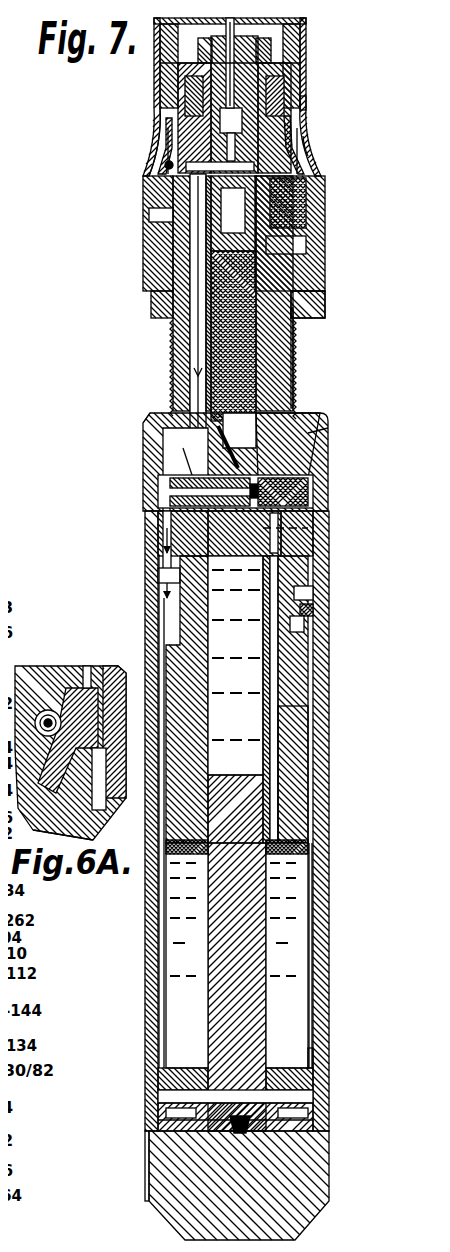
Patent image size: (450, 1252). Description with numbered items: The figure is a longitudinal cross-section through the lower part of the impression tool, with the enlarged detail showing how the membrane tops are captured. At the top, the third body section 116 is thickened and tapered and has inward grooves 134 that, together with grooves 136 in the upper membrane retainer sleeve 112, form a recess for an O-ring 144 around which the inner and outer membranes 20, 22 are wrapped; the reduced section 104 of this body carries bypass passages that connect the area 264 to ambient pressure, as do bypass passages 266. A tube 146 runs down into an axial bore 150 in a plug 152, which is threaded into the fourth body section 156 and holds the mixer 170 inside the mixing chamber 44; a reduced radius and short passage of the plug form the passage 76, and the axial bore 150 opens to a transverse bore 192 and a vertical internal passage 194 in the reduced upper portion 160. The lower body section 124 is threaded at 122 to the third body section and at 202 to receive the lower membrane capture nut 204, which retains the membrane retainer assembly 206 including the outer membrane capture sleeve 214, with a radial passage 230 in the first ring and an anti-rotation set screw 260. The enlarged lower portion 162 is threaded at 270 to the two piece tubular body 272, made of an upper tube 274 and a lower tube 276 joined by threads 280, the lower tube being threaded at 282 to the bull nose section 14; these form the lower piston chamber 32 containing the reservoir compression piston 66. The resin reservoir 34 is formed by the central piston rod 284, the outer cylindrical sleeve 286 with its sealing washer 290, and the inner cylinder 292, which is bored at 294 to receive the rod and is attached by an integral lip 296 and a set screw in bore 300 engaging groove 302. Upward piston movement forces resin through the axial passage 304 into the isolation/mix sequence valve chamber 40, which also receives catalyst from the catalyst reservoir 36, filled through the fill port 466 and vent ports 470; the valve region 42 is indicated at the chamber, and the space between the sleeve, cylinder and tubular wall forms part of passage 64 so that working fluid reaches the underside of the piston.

In FIG. 7, the tube 146 is at (224, 27).
In FIG. 7, the area (bore) 264 is at (258, 32).
In FIG. 7, the fourth body section 156 is at (298, 60).
In FIG. 7, the axial bore 150 is at (256, 82).
In FIG. 7, the external threads 122 is at (292, 97).
In FIG. 7, the plug 152 is at (246, 113).
In FIG. 7, the lower body section 124 is at (298, 135).
In FIG. 7, the radial passage 230 is at (294, 158).
In FIG. 7, the third body section 116 is at (150, 68).
In FIG. 6A, the third body section 116 is at (66, 828).
In FIG. 7, the inner membrane 20 is at (150, 122).
In FIG. 7, the outer membrane 22 is at (148, 142).
In FIG. 7, the transverse bore 192 is at (158, 152).
In FIG. 7, the membrane retainer assembly 206 is at (128, 238).
In FIG. 7, the vertical internal passage 194 is at (138, 258).
In FIG. 7, the outer membrane capture sleeve 214 is at (140, 281).
In FIG. 7, the bypass passages 266 is at (318, 237).
In FIG. 7, the anti-rotation key (set screw) 260 is at (306, 284).
In FIG. 7, the lower membrane capture nut 204 is at (312, 304).
In FIG. 7, the external threads 202 is at (163, 355).
In FIG. 7, the mixing chamber 44 is at (168, 326).
In FIG. 7, the reduced upper portion 160 is at (290, 336).
In FIG. 7, the mixer 170 is at (285, 360).
In FIG. 7, the passage 64 is at (183, 430).
In FIG. 7, the enlarged lower portion 162 is at (313, 412).
In FIG. 7, the fill port 466 is at (111, 422).
In FIG. 7, the valve assembly 42 is at (325, 498).
In FIG. 7, the isolation/mix sequence valve chamber 40 is at (140, 513).
In FIG. 7, the vent ports 470 is at (134, 545).
In FIG. 7, the external threads 270 is at (318, 526).
In FIG. 7, the integral lip 296 is at (310, 582).
In FIG. 7, the bore 300 is at (318, 605).
In FIG. 7, the groove 302 is at (305, 622).
In FIG. 7, the catalyst reservoir 36 is at (245, 657).
In FIG. 7, the upper tube 274 is at (313, 675).
In FIG. 7, the axial passage 304 is at (268, 700).
In FIG. 7, the axial central bore 294 is at (258, 720).
In FIG. 7, the two piece tubular body 272 is at (327, 750).
In FIG. 7, the inner cylinder 292 is at (292, 757).
In FIG. 7, the internal and external threads 280 is at (320, 790).
In FIG. 7, the lower piston chamber 32 is at (285, 872).
In FIG. 7, the lower tube 276 is at (322, 916).
In FIG. 7, the passage 76 is at (250, 955).
In FIG. 7, the central piston rod 284 is at (215, 918).
In FIG. 7, the outer cylindrical sleeve 286 is at (180, 968).
In FIG. 7, the resin reservoir 34 is at (180, 1007).
In FIG. 7, the sealing washer 290 is at (323, 1040).
In FIG. 7, the reservoir compression piston 66 is at (320, 1090).
In FIG. 7, the internal threads 282 is at (140, 1158).
In FIG. 7, the bull nose section 14 is at (302, 1193).
In FIG. 6A, the upper membrane retainer sleeve 112 is at (14, 660).
In FIG. 6A, the grooves 136 is at (36, 702).
In FIG. 6A, the O-ring 144 is at (45, 685).
In FIG. 6A, the reduced section 104 is at (106, 662).
In FIG. 6A, the inward grooves 134 is at (92, 800).